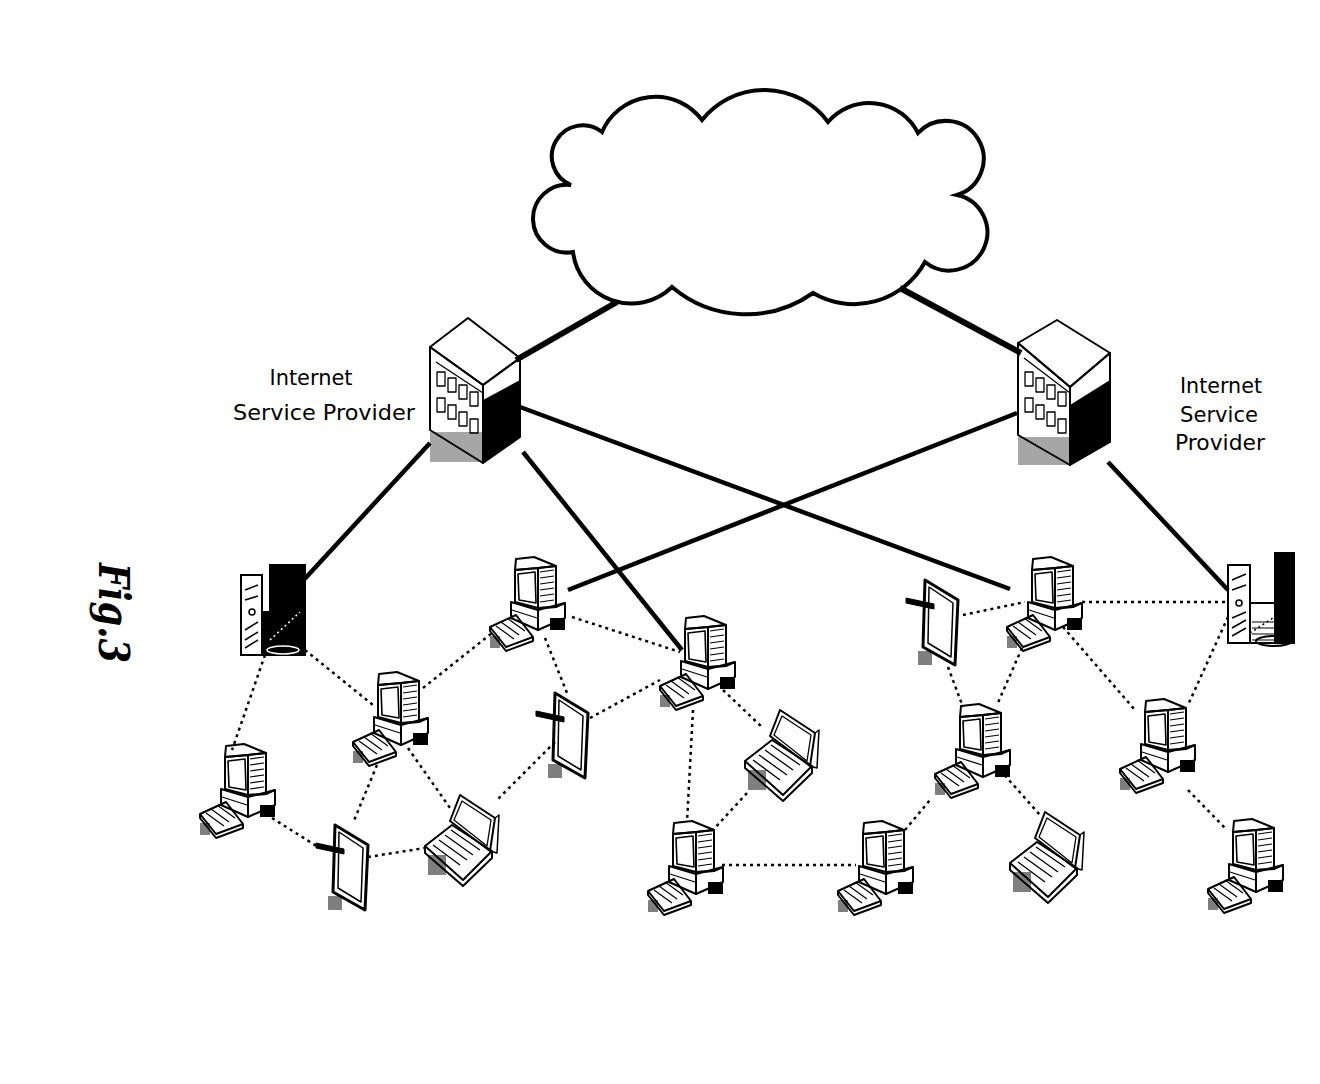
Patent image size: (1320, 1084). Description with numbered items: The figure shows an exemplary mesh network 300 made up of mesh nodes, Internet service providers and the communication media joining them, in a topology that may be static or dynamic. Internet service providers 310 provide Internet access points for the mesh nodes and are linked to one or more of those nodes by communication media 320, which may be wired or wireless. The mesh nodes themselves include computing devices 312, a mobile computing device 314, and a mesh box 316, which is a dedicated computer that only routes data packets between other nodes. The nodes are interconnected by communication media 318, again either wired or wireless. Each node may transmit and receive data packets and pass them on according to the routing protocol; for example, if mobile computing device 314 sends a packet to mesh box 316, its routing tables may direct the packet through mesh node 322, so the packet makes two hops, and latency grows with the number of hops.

The mesh network 300 is at (1152, 258).
The Internet service provider 310 is at (1003, 461).
The computing device 312 is at (1000, 878).
The mobile computing device 314 is at (325, 910).
The mesh box 316 is at (241, 553).
The communication media 318 is at (433, 678).
The communication media 320 is at (867, 460).
The mesh node 322 is at (272, 760).